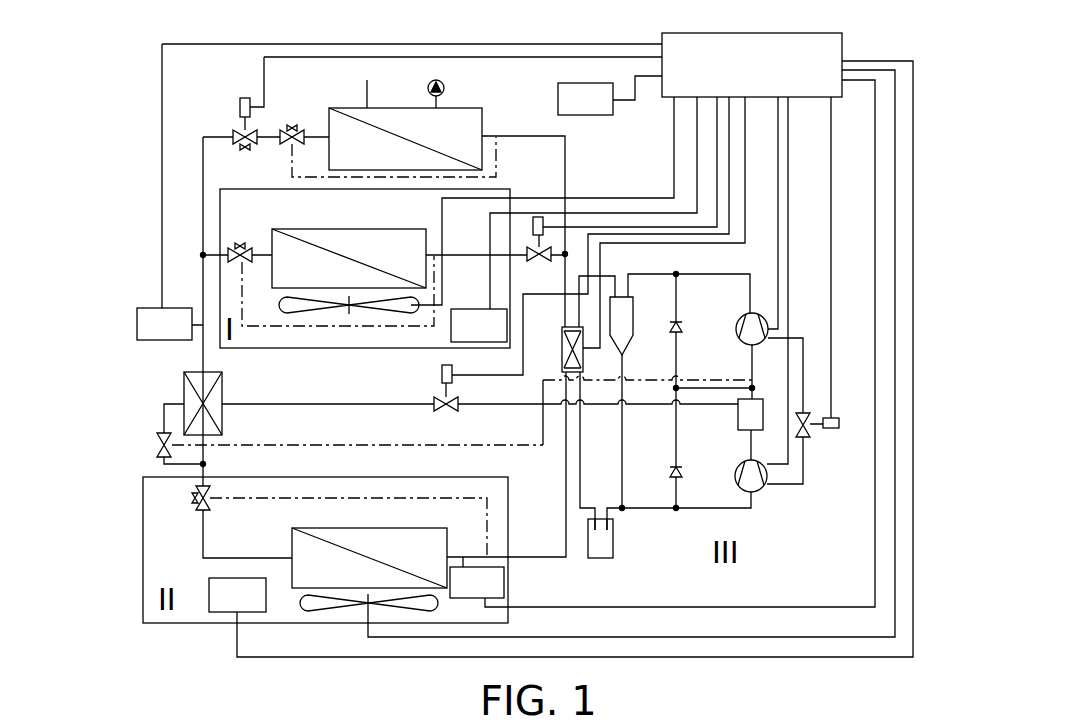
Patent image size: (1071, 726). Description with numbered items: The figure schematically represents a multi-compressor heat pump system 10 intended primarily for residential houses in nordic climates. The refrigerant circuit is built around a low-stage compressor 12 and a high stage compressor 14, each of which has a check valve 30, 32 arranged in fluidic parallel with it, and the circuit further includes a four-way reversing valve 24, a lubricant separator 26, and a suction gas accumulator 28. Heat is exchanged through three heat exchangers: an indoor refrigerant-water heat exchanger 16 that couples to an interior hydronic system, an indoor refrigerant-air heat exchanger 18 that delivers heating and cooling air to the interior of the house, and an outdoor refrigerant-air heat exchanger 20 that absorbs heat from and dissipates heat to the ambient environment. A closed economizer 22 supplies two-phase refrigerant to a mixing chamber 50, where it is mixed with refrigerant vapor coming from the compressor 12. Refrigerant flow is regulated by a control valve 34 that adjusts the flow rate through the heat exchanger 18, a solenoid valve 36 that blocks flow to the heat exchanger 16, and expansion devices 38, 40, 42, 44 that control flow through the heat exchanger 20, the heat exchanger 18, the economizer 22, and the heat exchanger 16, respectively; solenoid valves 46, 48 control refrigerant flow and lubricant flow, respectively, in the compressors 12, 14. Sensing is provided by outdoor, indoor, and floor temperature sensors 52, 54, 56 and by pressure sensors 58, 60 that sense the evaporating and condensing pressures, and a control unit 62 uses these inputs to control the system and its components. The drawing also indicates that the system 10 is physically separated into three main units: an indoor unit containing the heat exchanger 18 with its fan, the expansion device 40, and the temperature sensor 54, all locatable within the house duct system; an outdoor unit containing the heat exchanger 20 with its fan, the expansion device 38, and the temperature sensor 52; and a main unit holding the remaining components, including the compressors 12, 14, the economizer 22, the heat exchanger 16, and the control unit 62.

The heat pump system 10 is at (118, 72).
The low-stage compressor 12 is at (732, 479).
The high stage compressor 14 is at (736, 333).
The indoor refrigerant-water heat exchanger 16 is at (405, 125).
The indoor refrigerant-air heat exchanger 18 is at (349, 271).
The outdoor refrigerant-air heat exchanger 20 is at (369, 570).
The closed economizer 22 is at (223, 402).
The four-way reversing valve 24 is at (555, 349).
The lubricant separator 26 is at (638, 330).
The suction gas accumulator 28 is at (618, 550).
The check valve 30 is at (661, 469).
The check valve 32 is at (693, 316).
The control valve 34 is at (537, 252).
The solenoid valve 36 is at (245, 137).
The expansion device 38 is at (181, 503).
The expansion device 40 is at (241, 240).
The expansion device 42 is at (148, 448).
The expansion device 44 is at (293, 120).
The solenoid valve 46 is at (448, 403).
The solenoid valve 48 is at (828, 434).
The mixing chamber 50 is at (733, 421).
The outdoor temperature sensor 52 is at (237, 595).
The indoor temperature sensor 54 is at (479, 325).
The floor temperature sensor 56 is at (610, 95).
The pressure sensor 58 is at (477, 582).
The pressure sensor 60 is at (164, 324).
The control unit 62 is at (752, 65).